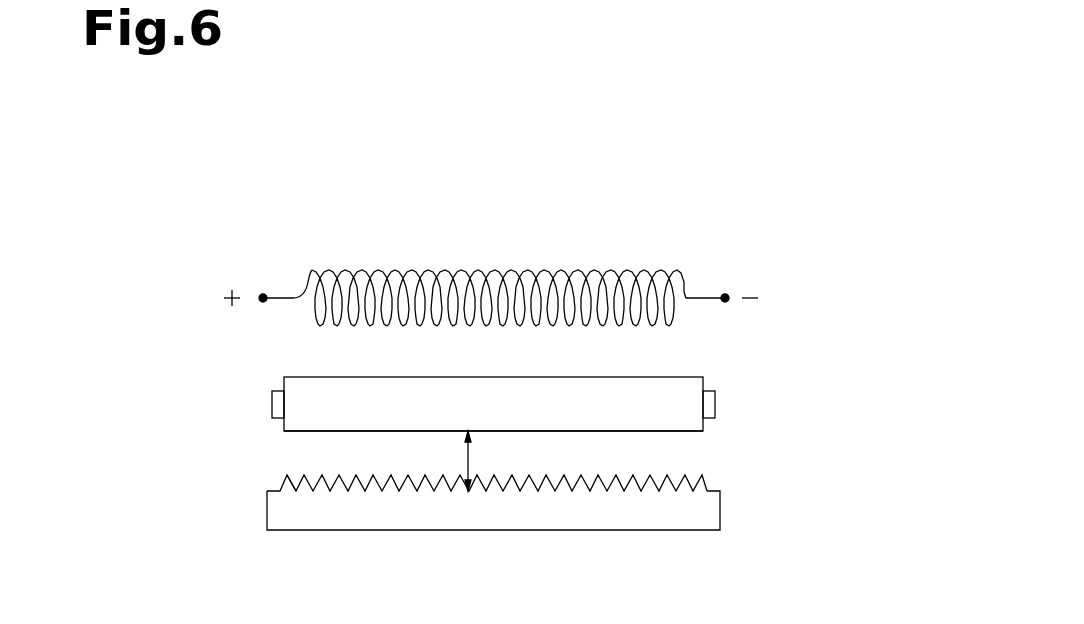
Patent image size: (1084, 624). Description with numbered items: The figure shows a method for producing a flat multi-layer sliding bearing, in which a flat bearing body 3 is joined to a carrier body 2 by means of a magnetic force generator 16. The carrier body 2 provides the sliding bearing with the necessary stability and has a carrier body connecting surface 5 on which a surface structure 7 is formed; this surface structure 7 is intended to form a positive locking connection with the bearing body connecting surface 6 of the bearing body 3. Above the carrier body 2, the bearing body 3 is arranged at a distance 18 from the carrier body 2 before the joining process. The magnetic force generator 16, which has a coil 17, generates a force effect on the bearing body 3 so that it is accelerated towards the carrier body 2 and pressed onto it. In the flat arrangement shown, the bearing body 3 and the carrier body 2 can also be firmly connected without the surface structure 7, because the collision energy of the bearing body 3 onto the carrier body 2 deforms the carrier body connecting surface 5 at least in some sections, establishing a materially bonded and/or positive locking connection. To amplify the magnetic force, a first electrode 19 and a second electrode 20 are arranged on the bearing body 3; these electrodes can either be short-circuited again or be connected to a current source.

The carrier body 2 is at (707, 508).
The bearing body 3 is at (683, 386).
The carrier body connecting surface 5 is at (262, 477).
The bearing body connecting surface 6 is at (598, 432).
The surface structure 7 is at (287, 460).
The magnetic force generator 16 is at (676, 243).
The coil 17 is at (306, 316).
The distance 18 is at (482, 452).
The first electrode 19 is at (279, 406).
The second electrode 20 is at (714, 400).